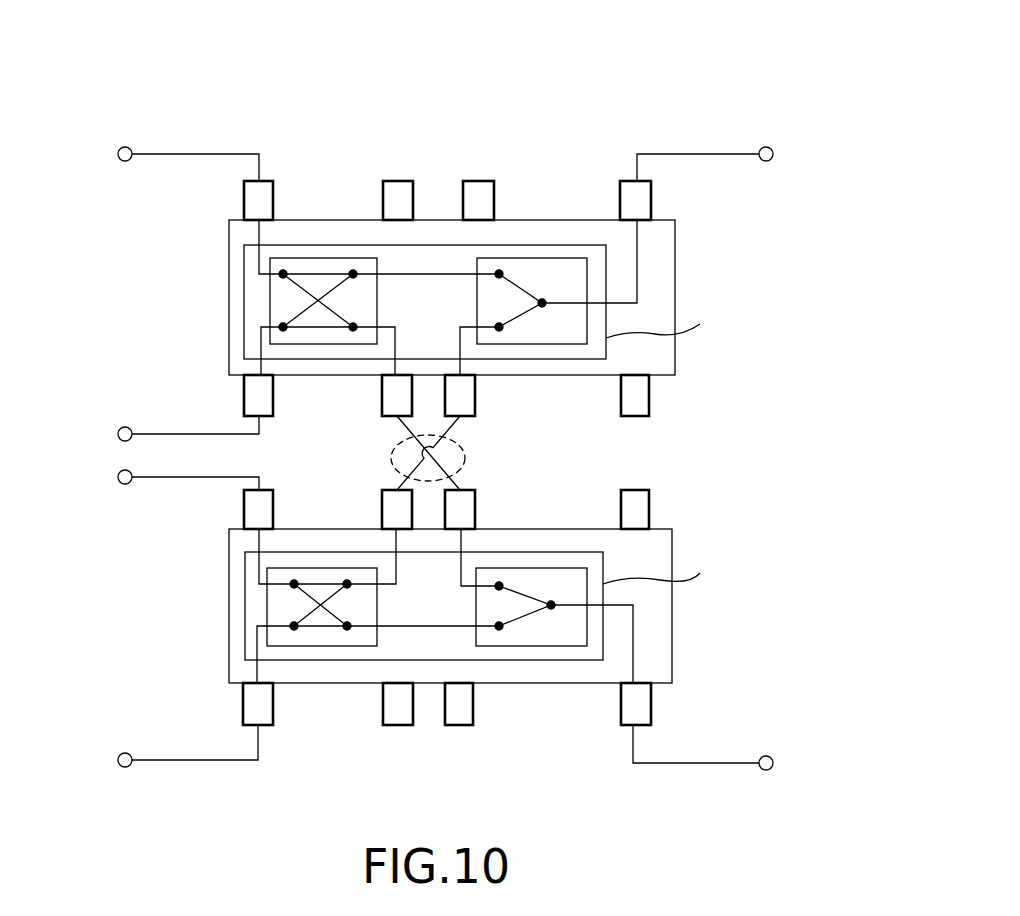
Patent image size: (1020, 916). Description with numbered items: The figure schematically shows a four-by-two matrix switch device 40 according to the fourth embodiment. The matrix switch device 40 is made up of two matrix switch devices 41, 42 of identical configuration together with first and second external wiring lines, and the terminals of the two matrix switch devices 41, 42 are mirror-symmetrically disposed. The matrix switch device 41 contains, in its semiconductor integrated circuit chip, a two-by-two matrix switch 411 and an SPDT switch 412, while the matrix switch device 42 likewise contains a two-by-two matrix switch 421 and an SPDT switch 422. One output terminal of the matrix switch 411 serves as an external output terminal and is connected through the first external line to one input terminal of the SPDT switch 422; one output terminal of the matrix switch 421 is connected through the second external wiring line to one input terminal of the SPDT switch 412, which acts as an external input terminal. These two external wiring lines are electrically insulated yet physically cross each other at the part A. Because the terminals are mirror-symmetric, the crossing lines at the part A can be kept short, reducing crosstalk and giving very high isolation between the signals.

The 4×2 matrix switch device 40 is at (523, 97).
The matrix switch device 41 is at (355, 237).
The 2×2 matrix switch 411 is at (312, 272).
The SPDT switch 412 is at (542, 265).
The matrix switch device 42 is at (360, 676).
The 2×2 matrix switch 421 is at (307, 636).
The SPDT switch 422 is at (532, 636).
The part A is at (391, 462).